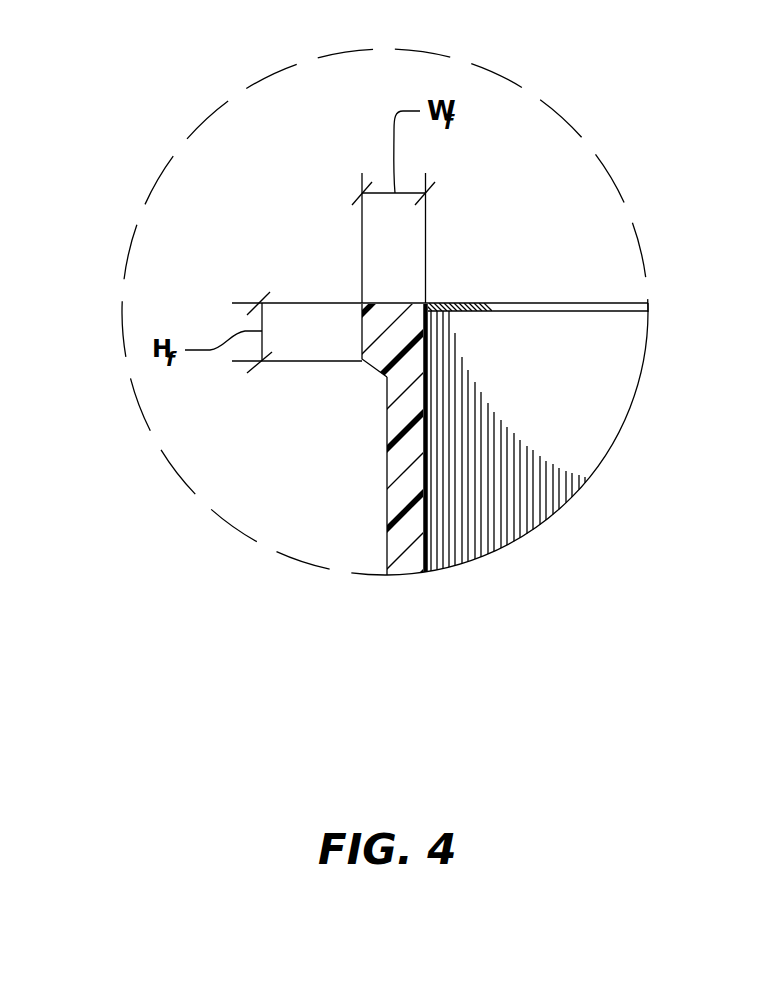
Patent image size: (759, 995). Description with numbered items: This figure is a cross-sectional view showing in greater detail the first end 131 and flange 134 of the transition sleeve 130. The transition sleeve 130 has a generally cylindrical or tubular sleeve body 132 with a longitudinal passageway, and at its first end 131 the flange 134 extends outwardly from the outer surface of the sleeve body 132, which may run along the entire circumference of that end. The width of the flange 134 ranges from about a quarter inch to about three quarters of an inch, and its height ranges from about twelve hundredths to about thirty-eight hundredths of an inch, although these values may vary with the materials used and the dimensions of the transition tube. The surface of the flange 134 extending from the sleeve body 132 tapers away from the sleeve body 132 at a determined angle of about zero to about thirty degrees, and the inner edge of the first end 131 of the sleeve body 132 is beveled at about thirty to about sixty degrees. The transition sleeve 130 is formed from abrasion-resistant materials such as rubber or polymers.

The transition sleeve 130 is at (396, 366).
The first end 131 is at (573, 303).
The sleeve body 132 is at (387, 475).
The flange 134 is at (362, 339).